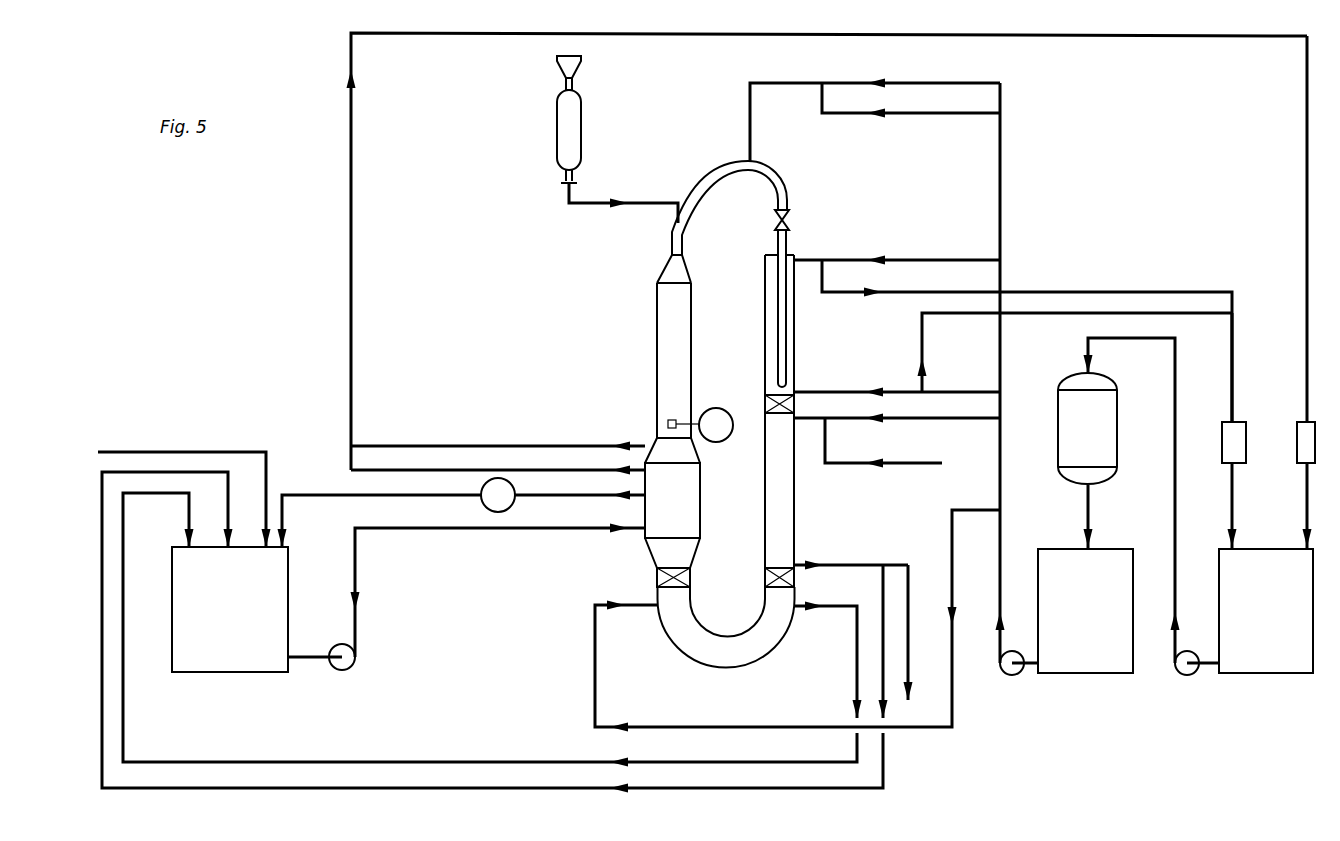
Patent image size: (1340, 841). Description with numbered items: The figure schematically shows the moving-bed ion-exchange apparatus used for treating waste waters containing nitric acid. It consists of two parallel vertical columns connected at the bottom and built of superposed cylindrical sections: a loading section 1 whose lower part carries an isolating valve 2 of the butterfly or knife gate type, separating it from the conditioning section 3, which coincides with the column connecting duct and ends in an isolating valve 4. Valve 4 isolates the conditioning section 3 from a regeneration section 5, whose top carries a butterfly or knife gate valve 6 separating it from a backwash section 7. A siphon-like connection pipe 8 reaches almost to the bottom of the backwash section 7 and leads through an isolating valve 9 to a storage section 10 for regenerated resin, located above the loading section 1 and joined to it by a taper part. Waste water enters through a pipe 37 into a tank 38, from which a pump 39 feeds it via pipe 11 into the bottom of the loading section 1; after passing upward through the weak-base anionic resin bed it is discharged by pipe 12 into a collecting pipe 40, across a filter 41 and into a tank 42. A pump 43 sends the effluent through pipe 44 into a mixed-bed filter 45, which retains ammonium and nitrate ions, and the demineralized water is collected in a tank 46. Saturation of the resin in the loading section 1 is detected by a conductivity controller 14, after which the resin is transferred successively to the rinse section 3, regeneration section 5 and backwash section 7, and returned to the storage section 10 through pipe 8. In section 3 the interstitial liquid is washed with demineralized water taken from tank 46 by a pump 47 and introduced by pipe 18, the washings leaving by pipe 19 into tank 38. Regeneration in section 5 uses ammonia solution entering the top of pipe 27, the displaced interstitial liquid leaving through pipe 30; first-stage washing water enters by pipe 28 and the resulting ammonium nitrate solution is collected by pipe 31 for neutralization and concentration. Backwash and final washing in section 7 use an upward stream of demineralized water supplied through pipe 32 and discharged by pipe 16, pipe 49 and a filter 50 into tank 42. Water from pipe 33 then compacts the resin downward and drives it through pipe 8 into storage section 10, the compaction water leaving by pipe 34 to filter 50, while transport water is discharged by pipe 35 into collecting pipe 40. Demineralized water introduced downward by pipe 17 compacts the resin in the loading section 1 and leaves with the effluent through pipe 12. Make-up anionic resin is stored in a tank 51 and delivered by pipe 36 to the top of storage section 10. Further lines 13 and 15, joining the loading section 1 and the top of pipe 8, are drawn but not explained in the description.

The loading section 1 is at (690, 531).
The isolating valve 2 is at (690, 577).
The conditioning section 3 is at (720, 660).
The isolating valve 4 is at (765, 583).
The regeneration section 5 is at (787, 531).
The butterfly or knife gate valve 6 is at (765, 405).
The backwash section 7 is at (815, 312).
The siphon-like connection pipe 8 is at (708, 194).
The isolating valve 9 is at (777, 221).
The storage section 10 is at (710, 392).
The pipe 11 is at (455, 529).
The pipe 12 is at (455, 471).
The line 13 is at (455, 496).
The conductivity controller 14 is at (498, 495).
The line 15 is at (915, 83).
The pipe 16 is at (915, 292).
The pipe 17 is at (915, 113).
The pipe 18 is at (592, 693).
The pipe 19 is at (862, 697).
The pipe 27 is at (905, 463).
The pipe 28 is at (955, 418).
The pipe 30 is at (887, 588).
The pipe 31 is at (938, 588).
The pipe 32 is at (955, 392).
The pipe 33 is at (915, 260).
The pipe 34 is at (1115, 313).
The pipe 35 is at (455, 447).
The pipe 36 is at (576, 203).
The pipe 37 is at (138, 450).
The tank 38 is at (230, 609).
The pump 39 is at (338, 660).
The collecting pipe 40 is at (378, 202).
The filter 41 is at (1299, 430).
The tank 42 is at (1266, 611).
The pump 43 is at (1182, 664).
The pipe 44 is at (1205, 364).
The mixed-bed filter 45 is at (1141, 451).
The tank 46 is at (1085, 611).
The pump 47 is at (1008, 664).
The pipe 49 is at (1265, 364).
The filter 50 is at (1272, 451).
The tank 51 is at (601, 134).